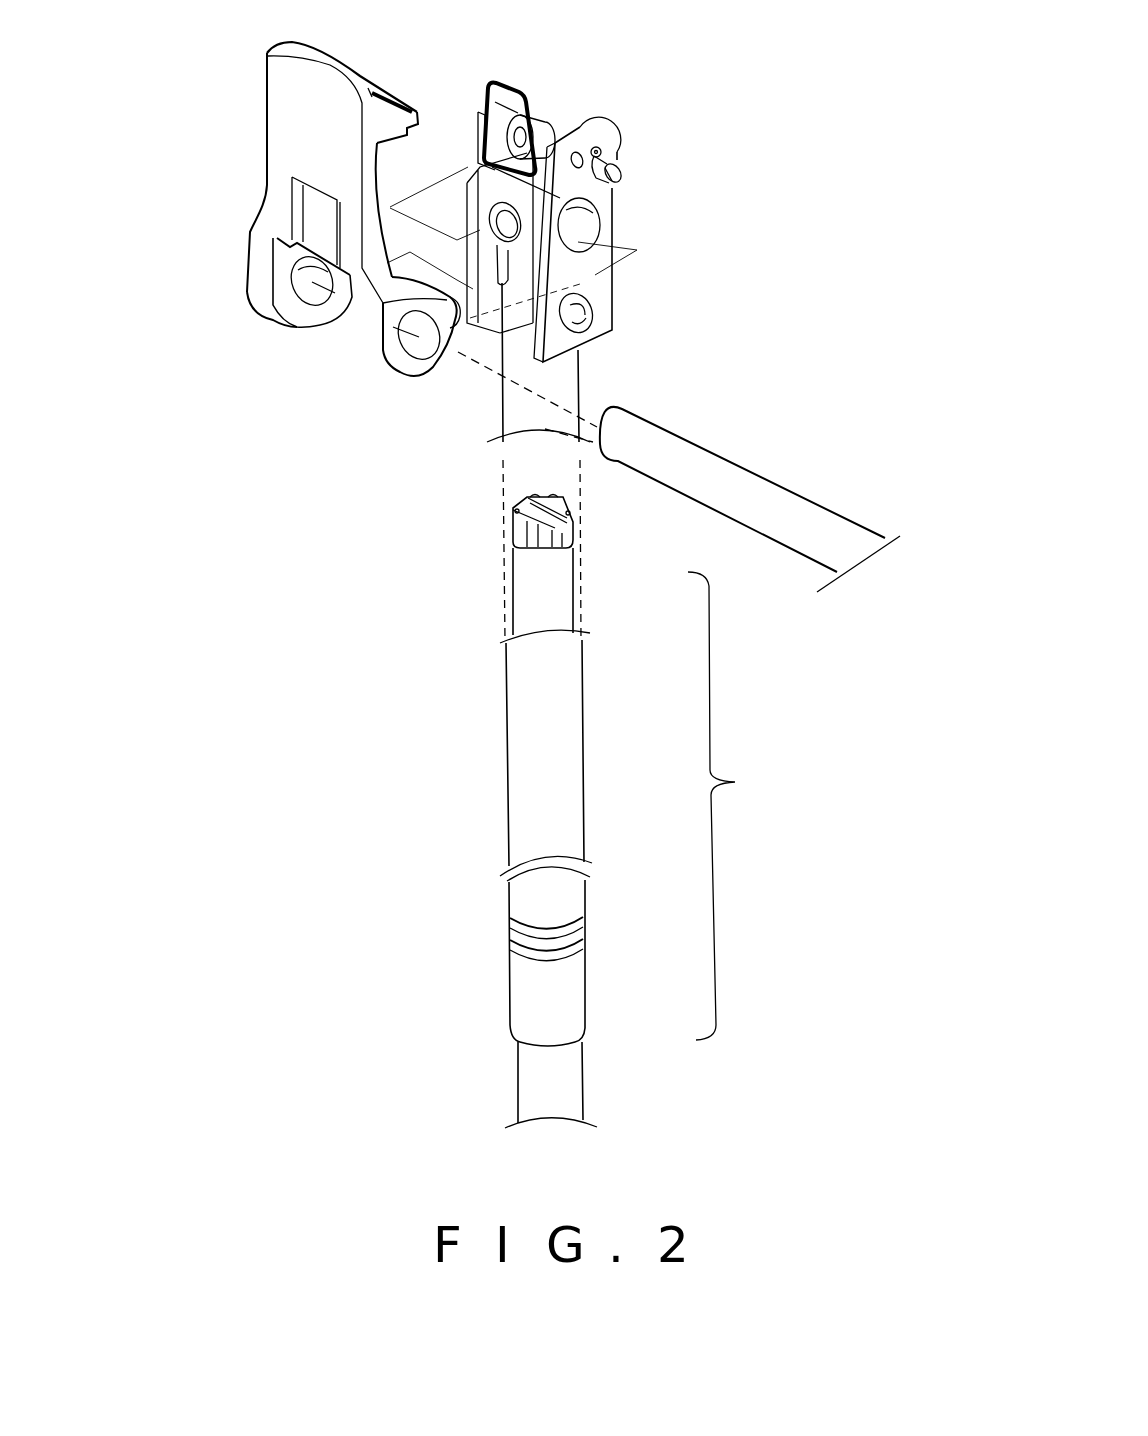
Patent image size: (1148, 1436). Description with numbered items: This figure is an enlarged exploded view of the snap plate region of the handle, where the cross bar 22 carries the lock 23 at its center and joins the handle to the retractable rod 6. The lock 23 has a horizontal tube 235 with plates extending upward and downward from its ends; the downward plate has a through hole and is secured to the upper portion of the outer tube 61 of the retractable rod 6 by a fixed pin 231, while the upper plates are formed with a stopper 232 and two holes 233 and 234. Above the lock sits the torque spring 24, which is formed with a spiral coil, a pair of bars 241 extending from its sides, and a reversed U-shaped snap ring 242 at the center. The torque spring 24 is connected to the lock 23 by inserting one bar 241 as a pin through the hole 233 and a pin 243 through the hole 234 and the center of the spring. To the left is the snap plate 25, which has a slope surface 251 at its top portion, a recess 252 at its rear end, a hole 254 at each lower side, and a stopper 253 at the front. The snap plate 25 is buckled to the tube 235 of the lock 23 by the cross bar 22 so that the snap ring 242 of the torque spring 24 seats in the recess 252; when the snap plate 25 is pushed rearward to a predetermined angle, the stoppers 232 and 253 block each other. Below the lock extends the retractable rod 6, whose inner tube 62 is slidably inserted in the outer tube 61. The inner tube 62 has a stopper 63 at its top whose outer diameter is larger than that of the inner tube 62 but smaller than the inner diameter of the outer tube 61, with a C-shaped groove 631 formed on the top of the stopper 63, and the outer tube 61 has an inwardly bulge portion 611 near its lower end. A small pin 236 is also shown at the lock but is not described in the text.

The retractable rod 6 is at (590, 705).
The outer tube 61 is at (555, 722).
The inwardly bulge portion 611 is at (562, 932).
The inner tube 62 is at (558, 1075).
The stopper 63 is at (530, 518).
The C-shaped groove 631 is at (573, 537).
The cross bar 22 is at (752, 500).
The lock 23 is at (613, 277).
The fixed pin 231 is at (585, 300).
The stopper 232 is at (615, 160).
The hole 233 is at (594, 146).
The hole 234 is at (575, 152).
The tube 235 is at (567, 232).
The pin 236 is at (502, 265).
The torque spring 24 is at (503, 133).
The bars 241 is at (600, 145).
The reversed U-shaped snap ring 242 is at (503, 93).
The pin 243 is at (618, 174).
The snap plate 25 is at (303, 96).
The slope surface 251 is at (390, 112).
The recess 252 is at (317, 210).
The stopper 253 is at (430, 368).
The hole 254 is at (417, 337).